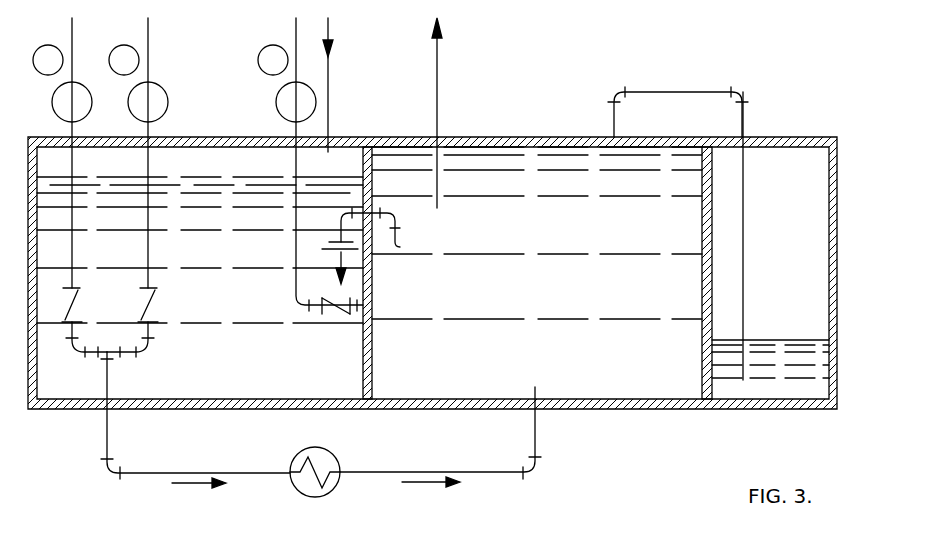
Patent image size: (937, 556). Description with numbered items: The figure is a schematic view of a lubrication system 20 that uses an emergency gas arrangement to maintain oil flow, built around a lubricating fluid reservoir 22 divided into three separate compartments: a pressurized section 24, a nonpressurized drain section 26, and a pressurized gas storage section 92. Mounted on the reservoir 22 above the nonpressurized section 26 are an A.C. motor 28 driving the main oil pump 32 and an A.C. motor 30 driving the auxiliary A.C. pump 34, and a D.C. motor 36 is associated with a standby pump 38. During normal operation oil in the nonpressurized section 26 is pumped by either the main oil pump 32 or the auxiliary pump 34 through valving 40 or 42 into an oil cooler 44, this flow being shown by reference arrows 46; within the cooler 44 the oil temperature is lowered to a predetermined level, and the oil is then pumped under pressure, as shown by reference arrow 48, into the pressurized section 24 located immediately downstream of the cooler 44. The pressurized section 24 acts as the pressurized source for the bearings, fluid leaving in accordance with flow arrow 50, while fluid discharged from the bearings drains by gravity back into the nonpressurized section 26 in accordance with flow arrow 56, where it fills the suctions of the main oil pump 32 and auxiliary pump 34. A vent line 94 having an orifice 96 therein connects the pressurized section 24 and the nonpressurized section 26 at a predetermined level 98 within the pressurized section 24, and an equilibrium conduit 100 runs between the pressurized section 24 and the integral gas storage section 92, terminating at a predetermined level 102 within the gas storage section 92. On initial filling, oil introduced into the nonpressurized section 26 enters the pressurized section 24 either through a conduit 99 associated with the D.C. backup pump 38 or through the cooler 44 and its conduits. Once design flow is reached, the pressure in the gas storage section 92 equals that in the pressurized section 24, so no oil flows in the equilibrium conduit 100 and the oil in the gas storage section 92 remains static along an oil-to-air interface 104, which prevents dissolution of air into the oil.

The lubrication system 20 is at (231, 96).
The lubricating fluid reservoir 22 is at (617, 441).
The pressurized section 24 is at (562, 293).
The nonpressurized drain section 26 is at (238, 258).
The A.C. motor 28 is at (50, 48).
The A.C. motor 30 is at (120, 48).
The main oil pump 32 is at (58, 110).
The auxiliary A.C. pump 34 is at (136, 109).
The D.C. motor 36 is at (279, 49).
The standby pump 38 is at (282, 110).
The valving 40 is at (80, 300).
The valving 42 is at (157, 300).
The oil cooler 44 is at (317, 497).
The reference arrows 46 is at (196, 486).
The reference arrow 48 is at (407, 488).
The flow arrow 50 is at (439, 101).
The flow arrow 56 is at (346, 85).
The pressurized gas storage section 92 is at (796, 261).
The vent line 94 is at (376, 212).
The orifice 96 is at (335, 240).
The predetermined level 98 is at (400, 247).
The conduit 99 is at (350, 317).
The equilibrium conduit 100 is at (695, 92).
The predetermined level 102 is at (744, 380).
The oil-to-air interface 104 is at (766, 340).